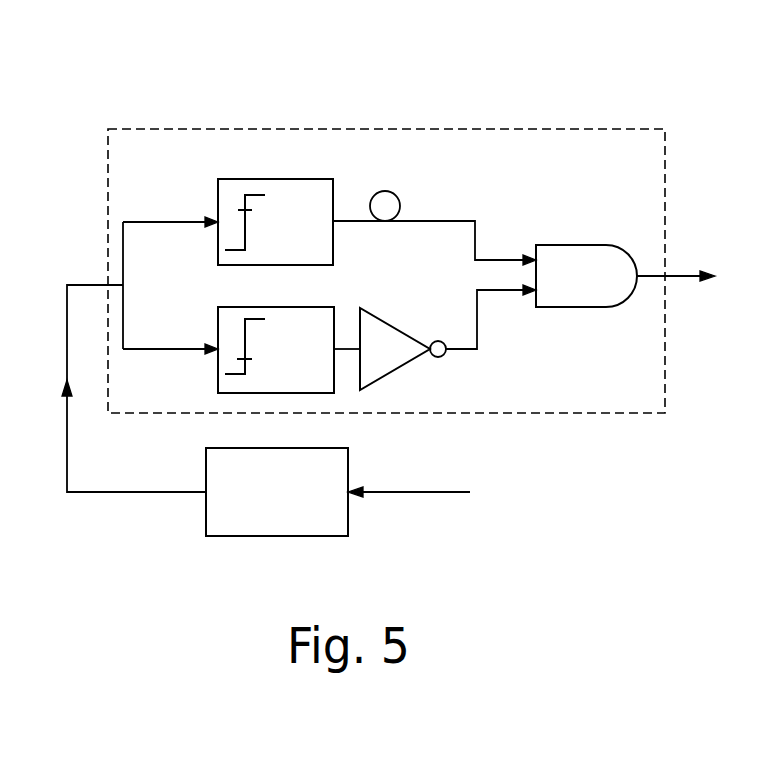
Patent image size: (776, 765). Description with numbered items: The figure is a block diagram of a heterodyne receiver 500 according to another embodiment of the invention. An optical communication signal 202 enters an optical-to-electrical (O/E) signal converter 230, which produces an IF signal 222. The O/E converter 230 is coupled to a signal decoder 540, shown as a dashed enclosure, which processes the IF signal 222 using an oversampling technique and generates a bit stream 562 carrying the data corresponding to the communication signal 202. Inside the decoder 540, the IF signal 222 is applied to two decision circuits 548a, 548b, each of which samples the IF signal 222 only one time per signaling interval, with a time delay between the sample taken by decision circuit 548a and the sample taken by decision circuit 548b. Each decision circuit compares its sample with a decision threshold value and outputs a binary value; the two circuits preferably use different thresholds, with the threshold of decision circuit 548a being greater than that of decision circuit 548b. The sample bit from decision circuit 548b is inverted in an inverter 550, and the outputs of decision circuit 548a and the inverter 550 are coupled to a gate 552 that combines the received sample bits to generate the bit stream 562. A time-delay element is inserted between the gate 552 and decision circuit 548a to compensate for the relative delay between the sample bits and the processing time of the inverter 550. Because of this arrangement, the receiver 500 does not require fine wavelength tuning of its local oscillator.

The heterodyne receiver 500 is at (401, 322).
The signal decoder 540 is at (510, 128).
The decision circuit 548a is at (235, 179).
The decision circuit 548b is at (240, 307).
The inverter 550 is at (378, 318).
The OR gate 552 is at (568, 245).
The bit stream 562 is at (653, 273).
The IF signal 222 is at (137, 492).
The communication signal 202 is at (393, 492).
The optical-to-electrical signal converter 230 is at (230, 536).